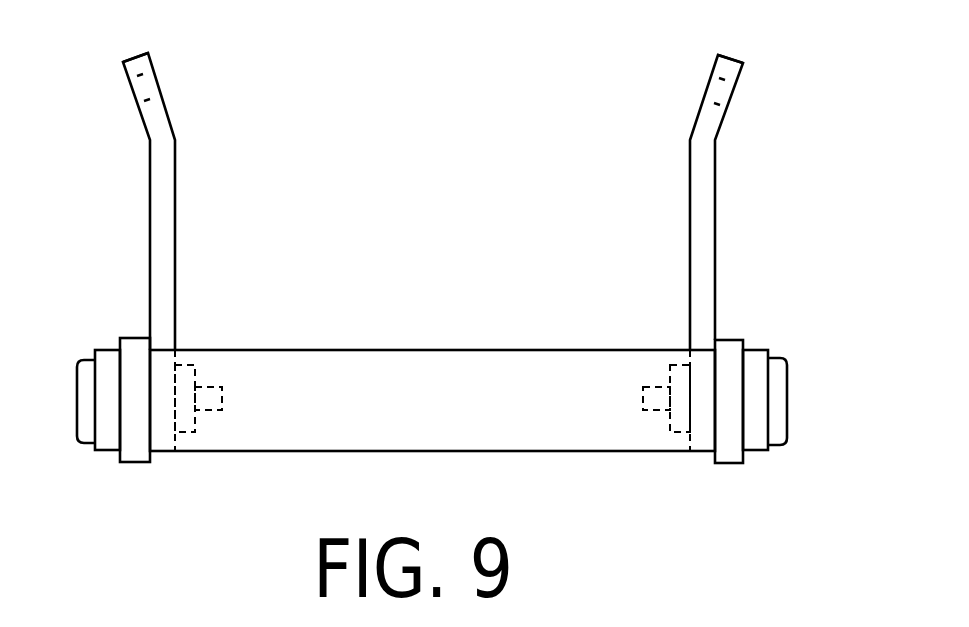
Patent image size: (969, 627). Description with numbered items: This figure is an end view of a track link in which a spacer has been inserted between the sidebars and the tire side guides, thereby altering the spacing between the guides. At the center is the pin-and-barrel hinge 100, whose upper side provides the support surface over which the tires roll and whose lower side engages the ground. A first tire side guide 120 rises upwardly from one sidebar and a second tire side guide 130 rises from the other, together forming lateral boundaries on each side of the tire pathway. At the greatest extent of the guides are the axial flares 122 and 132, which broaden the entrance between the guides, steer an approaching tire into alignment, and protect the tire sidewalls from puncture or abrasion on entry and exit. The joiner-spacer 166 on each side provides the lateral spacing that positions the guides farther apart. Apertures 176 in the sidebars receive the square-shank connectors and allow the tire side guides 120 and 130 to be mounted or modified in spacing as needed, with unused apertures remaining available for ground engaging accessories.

The hinge 100 is at (432, 434).
The first tire side guide 120 is at (712, 199).
The axial flare 122 is at (818, 89).
The second tire side guide 130 is at (184, 211).
The axial flare 132 is at (150, 57).
The joiner-spacer 166 is at (437, 373).
The apertures 176 is at (431, 100).